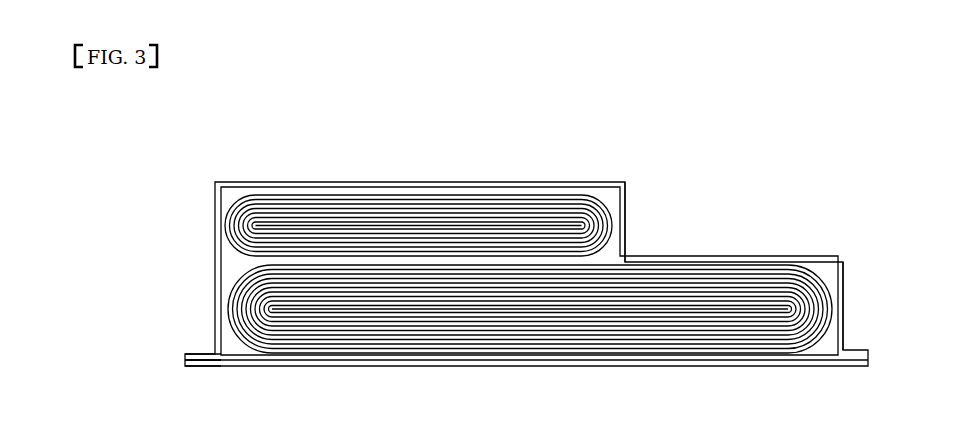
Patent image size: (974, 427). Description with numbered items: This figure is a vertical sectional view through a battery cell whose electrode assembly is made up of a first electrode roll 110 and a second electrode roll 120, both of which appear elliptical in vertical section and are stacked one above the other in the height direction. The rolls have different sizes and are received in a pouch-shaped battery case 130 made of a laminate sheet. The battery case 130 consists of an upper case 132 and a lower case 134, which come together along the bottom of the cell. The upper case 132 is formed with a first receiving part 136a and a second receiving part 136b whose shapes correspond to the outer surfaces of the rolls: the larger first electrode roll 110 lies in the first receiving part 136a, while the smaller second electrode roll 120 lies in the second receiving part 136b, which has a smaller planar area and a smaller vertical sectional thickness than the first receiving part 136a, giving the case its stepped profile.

The first electrode roll 110 is at (748, 276).
The second electrode roll 120 is at (525, 192).
The battery case 130 is at (838, 256).
The upper case 132 is at (216, 348).
The lower case 134 is at (216, 370).
The first receiving part 136a is at (853, 257).
The second receiving part 136b is at (646, 187).